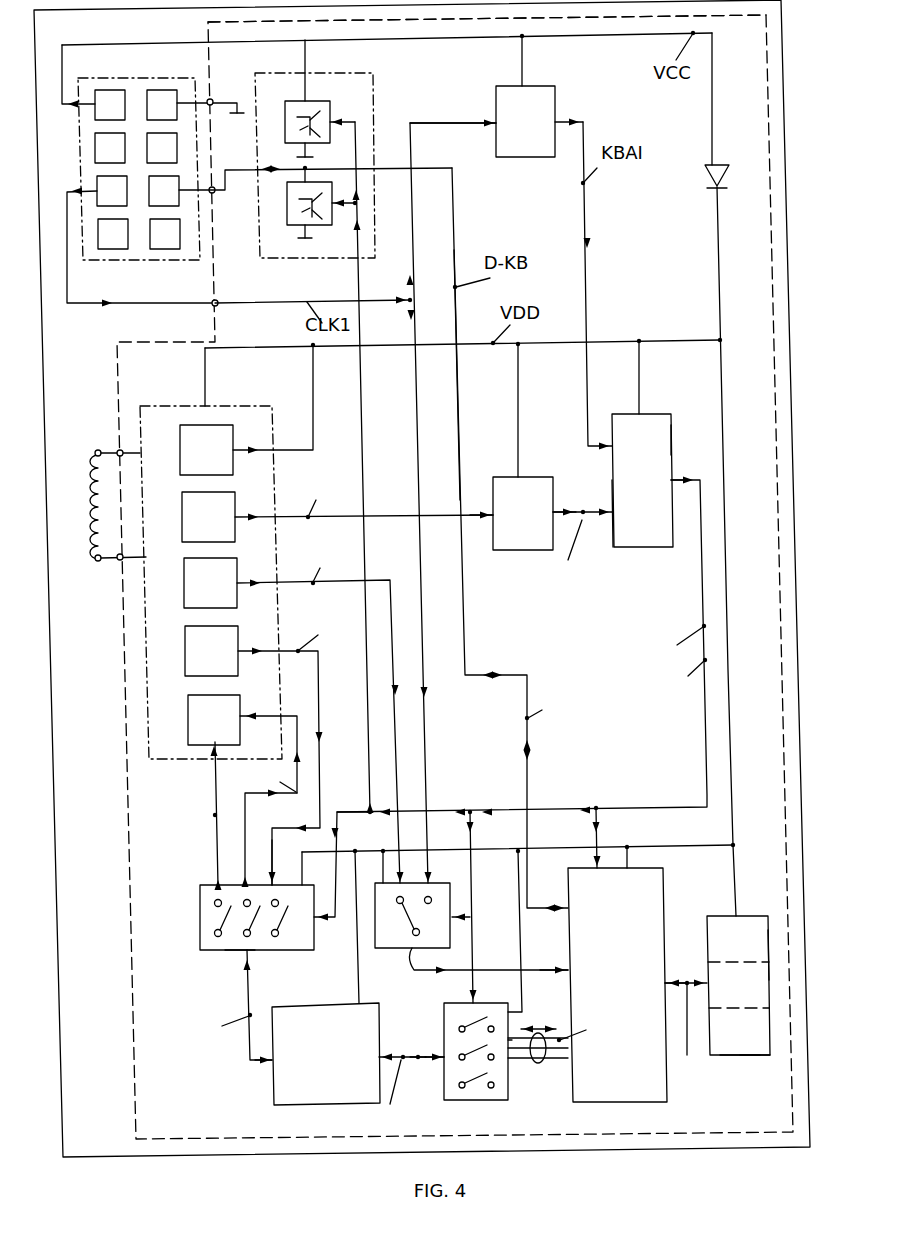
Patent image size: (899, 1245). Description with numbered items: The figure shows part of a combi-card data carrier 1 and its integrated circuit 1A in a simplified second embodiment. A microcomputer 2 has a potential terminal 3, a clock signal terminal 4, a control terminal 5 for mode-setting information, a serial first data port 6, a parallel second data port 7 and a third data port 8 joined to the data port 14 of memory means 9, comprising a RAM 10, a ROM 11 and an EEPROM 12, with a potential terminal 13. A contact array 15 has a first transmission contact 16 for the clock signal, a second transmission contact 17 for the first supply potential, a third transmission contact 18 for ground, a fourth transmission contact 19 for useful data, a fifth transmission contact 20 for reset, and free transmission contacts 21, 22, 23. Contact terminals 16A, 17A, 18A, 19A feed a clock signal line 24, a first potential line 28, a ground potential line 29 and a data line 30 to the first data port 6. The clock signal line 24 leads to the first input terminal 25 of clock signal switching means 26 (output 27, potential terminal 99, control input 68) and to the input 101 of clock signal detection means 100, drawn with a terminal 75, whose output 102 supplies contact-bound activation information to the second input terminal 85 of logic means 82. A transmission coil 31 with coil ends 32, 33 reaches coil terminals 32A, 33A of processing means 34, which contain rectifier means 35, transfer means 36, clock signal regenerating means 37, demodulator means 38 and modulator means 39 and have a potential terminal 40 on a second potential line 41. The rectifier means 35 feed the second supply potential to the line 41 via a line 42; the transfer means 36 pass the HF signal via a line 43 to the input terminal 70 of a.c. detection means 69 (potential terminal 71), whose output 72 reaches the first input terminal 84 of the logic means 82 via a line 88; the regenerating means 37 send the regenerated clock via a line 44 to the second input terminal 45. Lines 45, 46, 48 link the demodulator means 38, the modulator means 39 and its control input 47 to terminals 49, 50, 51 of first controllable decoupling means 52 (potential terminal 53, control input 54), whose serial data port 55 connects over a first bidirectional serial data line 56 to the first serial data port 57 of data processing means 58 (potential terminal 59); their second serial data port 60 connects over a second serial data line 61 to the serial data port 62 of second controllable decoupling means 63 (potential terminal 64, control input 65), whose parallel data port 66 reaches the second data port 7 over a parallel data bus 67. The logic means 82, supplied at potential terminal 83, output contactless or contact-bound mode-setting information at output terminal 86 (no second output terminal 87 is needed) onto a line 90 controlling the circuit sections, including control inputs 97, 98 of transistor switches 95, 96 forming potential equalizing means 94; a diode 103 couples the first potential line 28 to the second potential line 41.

The data carrier 1 is at (216, 1159).
The circuit 1A is at (126, 845).
The microcomputer 2 is at (663, 1106).
The potential terminal 3 is at (632, 867).
The clock signal terminal 4 is at (566, 967).
The control terminal 5 is at (592, 867).
The first data port 6 is at (566, 906).
The second data port 7 is at (565, 1070).
The third data port 8 is at (669, 981).
The memory means 9 is at (745, 1062).
The RAM 10 is at (748, 918).
The ROM 11 is at (769, 978).
The EEPROM 12 is at (759, 1047).
The potential terminal 13 is at (733, 912).
The data port 14 is at (706, 979).
The contact array 15 is at (165, 267).
The first transmission contact 16 is at (104, 190).
The first contact terminal 16A is at (217, 305).
The second transmission contact 17 is at (108, 100).
The second contact terminal 17A is at (206, 42).
The third transmission contact 18 is at (158, 97).
The third contact terminal 18A is at (212, 104).
The fourth transmission contact 19 is at (173, 197).
The fourth contact terminal 19A is at (213, 193).
The fifth transmission contact 20 is at (107, 148).
The sixth transmission contact 21 is at (170, 150).
The seventh transmission contact 22 is at (110, 240).
The eighth transmission contact 23 is at (158, 240).
The clock signal line 24 is at (380, 300).
The first input terminal 25 is at (430, 878).
The clock signal switching means 26 is at (389, 957).
The output 27 is at (488, 979).
The first electrically conductive potential line 28 is at (412, 42).
The second electrically conductive potential line 29 is at (226, 98).
The data line 30 is at (460, 397).
The transmission coil 31 is at (88, 485).
The coil end 32 is at (96, 450).
The coil terminal 32A is at (118, 450).
The coil end 33 is at (96, 561).
The coil terminal 33A is at (118, 560).
The processing means 34 is at (164, 397).
The rectifier means 35 is at (187, 448).
The transfer means 36 is at (188, 518).
The clock signal regenerating means 37 is at (190, 587).
The demodulator means 38 is at (191, 654).
The modulator means 39 is at (192, 720).
The potential terminal 40 is at (209, 405).
The second electrically conductive potential line 41 is at (384, 347).
The electrically conductive line 42 is at (312, 392).
The electrically conductive line 43 is at (385, 514).
The electrically conductive line 44 is at (384, 579).
The second input terminal 45 is at (319, 680).
The electrically conductive line 46 is at (290, 714).
The control input 47 is at (212, 748).
The electrically conductive line 48 is at (215, 815).
The terminal 49 is at (275, 865).
The terminal 50 is at (247, 880).
The terminal 51 is at (214, 878).
The first controllable decoupling means 52 is at (197, 954).
The potential terminal 53 is at (302, 878).
The control input 54 is at (318, 921).
The serial data port 55 is at (240, 951).
The first bidirectional serial data line 56 is at (252, 1004).
The first serial data port 57 is at (270, 1063).
The data processing means 58 is at (266, 1096).
The potential terminal 59 is at (357, 1002).
The second serial data port 60 is at (383, 1054).
The second serial data line 61 is at (418, 1060).
The serial data port 62 is at (440, 1055).
The second controllable decoupling means 63 is at (480, 1100).
The potential terminal 64 is at (510, 1012).
The control input 65 is at (477, 1003).
The parallel data port 66 is at (513, 1070).
The parallel data bus 67 is at (538, 1072).
The control input 68 is at (454, 913).
The a.c. detection means 69 is at (514, 556).
The input terminal 70 is at (492, 507).
The potential terminal 71 is at (517, 473).
The output 72 is at (555, 508).
The supply input 75 is at (525, 85).
The logic means 82 is at (656, 553).
The potential terminal 83 is at (638, 410).
The first input terminal 84 is at (613, 520).
The second input terminal 85 is at (610, 443).
The first output terminal 86 is at (674, 480).
The second output terminal 87 is at (672, 440).
The electrically conductive line 88 is at (590, 510).
The electrically conductive line 90 is at (705, 794).
The potential equalizing means 94 is at (287, 265).
The controllable transistor switch 95 is at (292, 111).
The controllable transistor switch 96 is at (296, 218).
The control input 97 is at (331, 117).
The control input 98 is at (337, 210).
The potential terminal 99 is at (383, 878).
The clock signal detection means 100 is at (562, 97).
The input 101 is at (490, 118).
The output 102 is at (560, 120).
The diode 103 is at (715, 174).